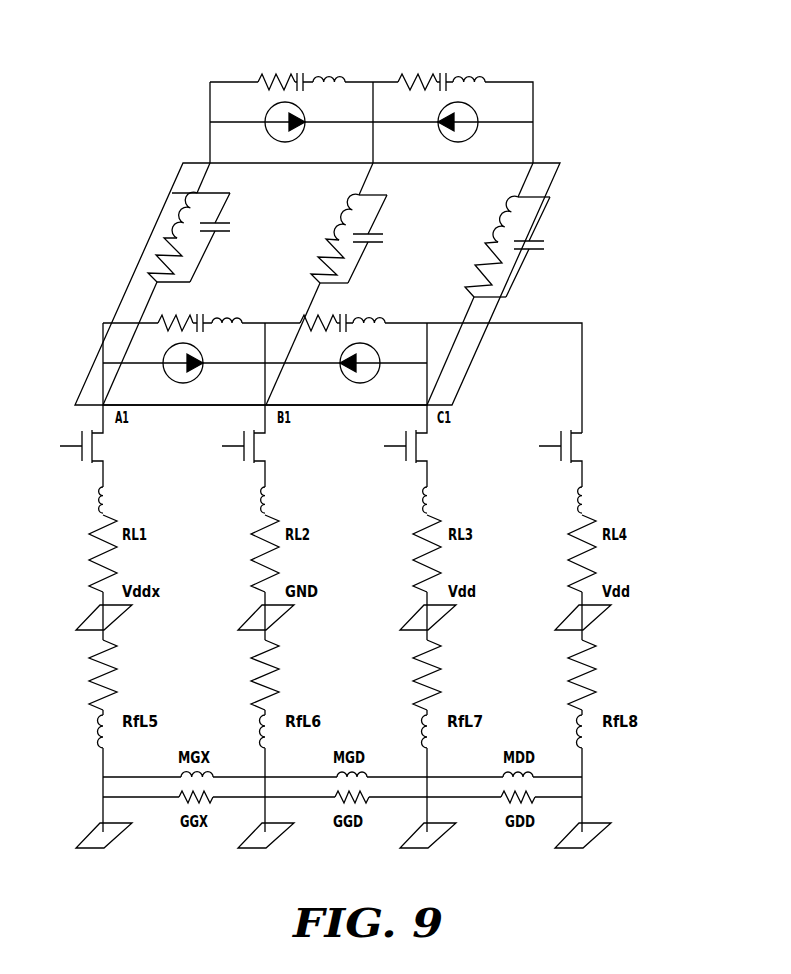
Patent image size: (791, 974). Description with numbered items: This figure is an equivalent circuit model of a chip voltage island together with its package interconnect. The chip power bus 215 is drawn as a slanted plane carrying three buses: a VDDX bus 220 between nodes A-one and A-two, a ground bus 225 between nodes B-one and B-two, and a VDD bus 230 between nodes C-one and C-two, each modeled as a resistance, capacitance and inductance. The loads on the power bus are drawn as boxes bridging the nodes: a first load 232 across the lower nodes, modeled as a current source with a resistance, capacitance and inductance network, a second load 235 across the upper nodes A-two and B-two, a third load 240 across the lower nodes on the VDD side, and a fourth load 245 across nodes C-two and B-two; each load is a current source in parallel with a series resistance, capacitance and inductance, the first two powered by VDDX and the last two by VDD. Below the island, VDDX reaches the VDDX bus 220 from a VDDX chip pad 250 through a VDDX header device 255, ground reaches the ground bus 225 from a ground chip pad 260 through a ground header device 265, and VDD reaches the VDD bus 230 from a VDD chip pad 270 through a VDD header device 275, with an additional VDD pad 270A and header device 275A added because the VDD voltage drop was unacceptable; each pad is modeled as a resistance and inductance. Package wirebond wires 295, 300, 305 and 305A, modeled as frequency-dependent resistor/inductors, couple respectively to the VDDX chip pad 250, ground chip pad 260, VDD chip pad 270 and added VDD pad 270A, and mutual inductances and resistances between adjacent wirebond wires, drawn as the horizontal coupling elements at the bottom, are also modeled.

The chip power bus 215 is at (543, 216).
The VDDX bus 220 is at (197, 191).
The GND bus 225 is at (360, 191).
The VDD bus 230 is at (520, 192).
The RLC4 network with current source I1 232 is at (100, 305).
The second load 235 is at (370, 54).
The third load 240 is at (427, 305).
The fourth load 245 is at (533, 54).
The VDDX chip pad 250 is at (100, 597).
The VDDX header device 255 is at (100, 443).
The GND chip pad 260 is at (263, 597).
The GND header device 265 is at (262, 443).
The VDD chip pad 270 is at (425, 597).
The additional VDD pad 270A is at (580, 597).
The VDD header device 275 is at (427, 444).
The header device 275A is at (583, 444).
The wirebond wire 295 is at (103, 822).
The wirebond wire 300 is at (265, 822).
The wirebond wire 305 is at (427, 822).
The wirebond wire 305A is at (582, 822).